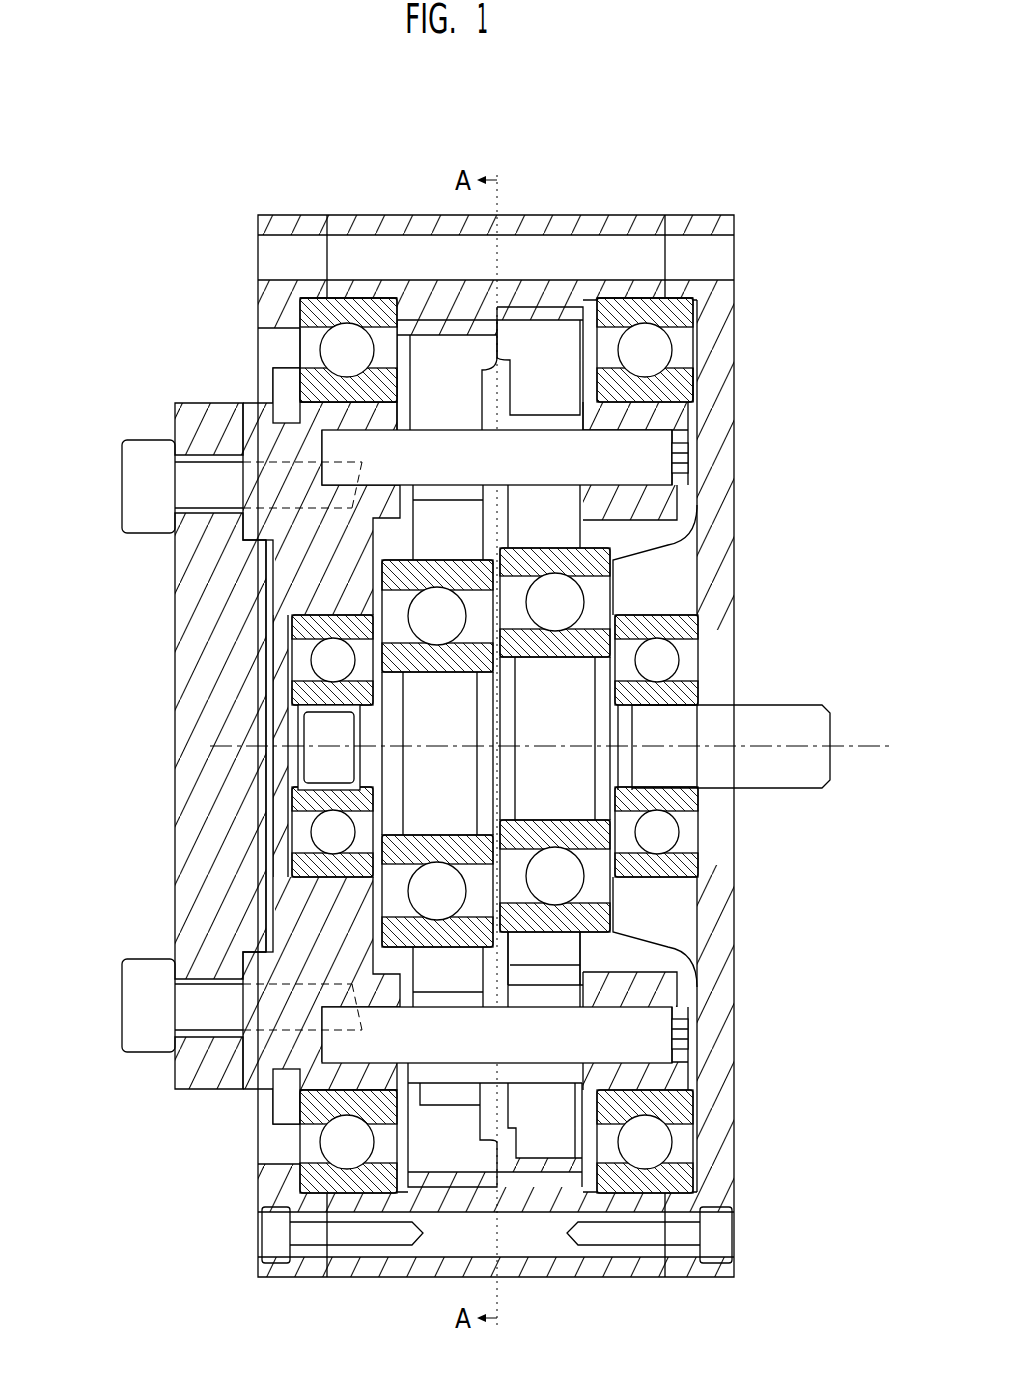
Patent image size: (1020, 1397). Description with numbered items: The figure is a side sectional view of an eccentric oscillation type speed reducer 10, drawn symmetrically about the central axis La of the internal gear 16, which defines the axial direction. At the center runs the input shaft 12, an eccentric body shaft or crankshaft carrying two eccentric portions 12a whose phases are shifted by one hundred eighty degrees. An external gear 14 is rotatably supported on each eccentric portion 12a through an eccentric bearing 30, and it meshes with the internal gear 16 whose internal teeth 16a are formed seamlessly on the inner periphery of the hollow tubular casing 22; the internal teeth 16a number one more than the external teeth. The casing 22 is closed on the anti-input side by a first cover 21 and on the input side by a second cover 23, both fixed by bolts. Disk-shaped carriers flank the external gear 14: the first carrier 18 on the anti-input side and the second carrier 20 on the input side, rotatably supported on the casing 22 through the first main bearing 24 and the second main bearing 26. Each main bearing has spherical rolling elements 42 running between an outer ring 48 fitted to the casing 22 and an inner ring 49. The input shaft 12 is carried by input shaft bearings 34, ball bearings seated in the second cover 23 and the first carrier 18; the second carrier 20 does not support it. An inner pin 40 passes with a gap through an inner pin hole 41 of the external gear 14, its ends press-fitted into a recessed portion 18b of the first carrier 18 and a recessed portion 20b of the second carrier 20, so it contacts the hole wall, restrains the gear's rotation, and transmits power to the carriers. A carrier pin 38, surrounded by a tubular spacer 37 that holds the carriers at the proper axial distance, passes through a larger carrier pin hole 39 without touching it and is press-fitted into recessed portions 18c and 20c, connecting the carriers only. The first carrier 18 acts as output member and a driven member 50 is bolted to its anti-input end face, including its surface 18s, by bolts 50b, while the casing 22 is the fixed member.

The eccentric oscillation type speed reducer 10 is at (613, 136).
The input shaft 12 is at (815, 765).
The eccentric portion 12a is at (362, 772).
The external gear 14 is at (463, 345).
The internal gear 16 is at (430, 298).
The internal teeth 16a is at (532, 300).
The first carrier 18 is at (262, 414).
The first member surface 18s is at (287, 398).
The recessed portion 18b is at (350, 437).
The recessed portion 18c is at (440, 1090).
The second carrier 20 is at (690, 524).
The recessed portion 20b is at (645, 437).
The recessed portion 20c is at (626, 1010).
The first cover 21 is at (290, 213).
The casing 22 is at (378, 213).
The second cover 23 is at (712, 213).
The first main bearing 24 is at (289, 345).
The second main bearing 26 is at (700, 337).
The eccentric bearing 30 is at (312, 597).
The input shaft bearing 34 is at (302, 682).
The spacer 37 is at (587, 1000).
The carrier pin 38 is at (682, 1060).
The carrier pin hole 39 is at (580, 973).
The inner pin 40 is at (655, 458).
The inner pin hole 41 is at (625, 410).
The rolling element 42 is at (342, 348).
The outer ring 48 is at (323, 302).
The inner ring 49 is at (280, 345).
The driven member 50 is at (196, 658).
The bolt 50b is at (121, 493).
The central axis La is at (847, 740).